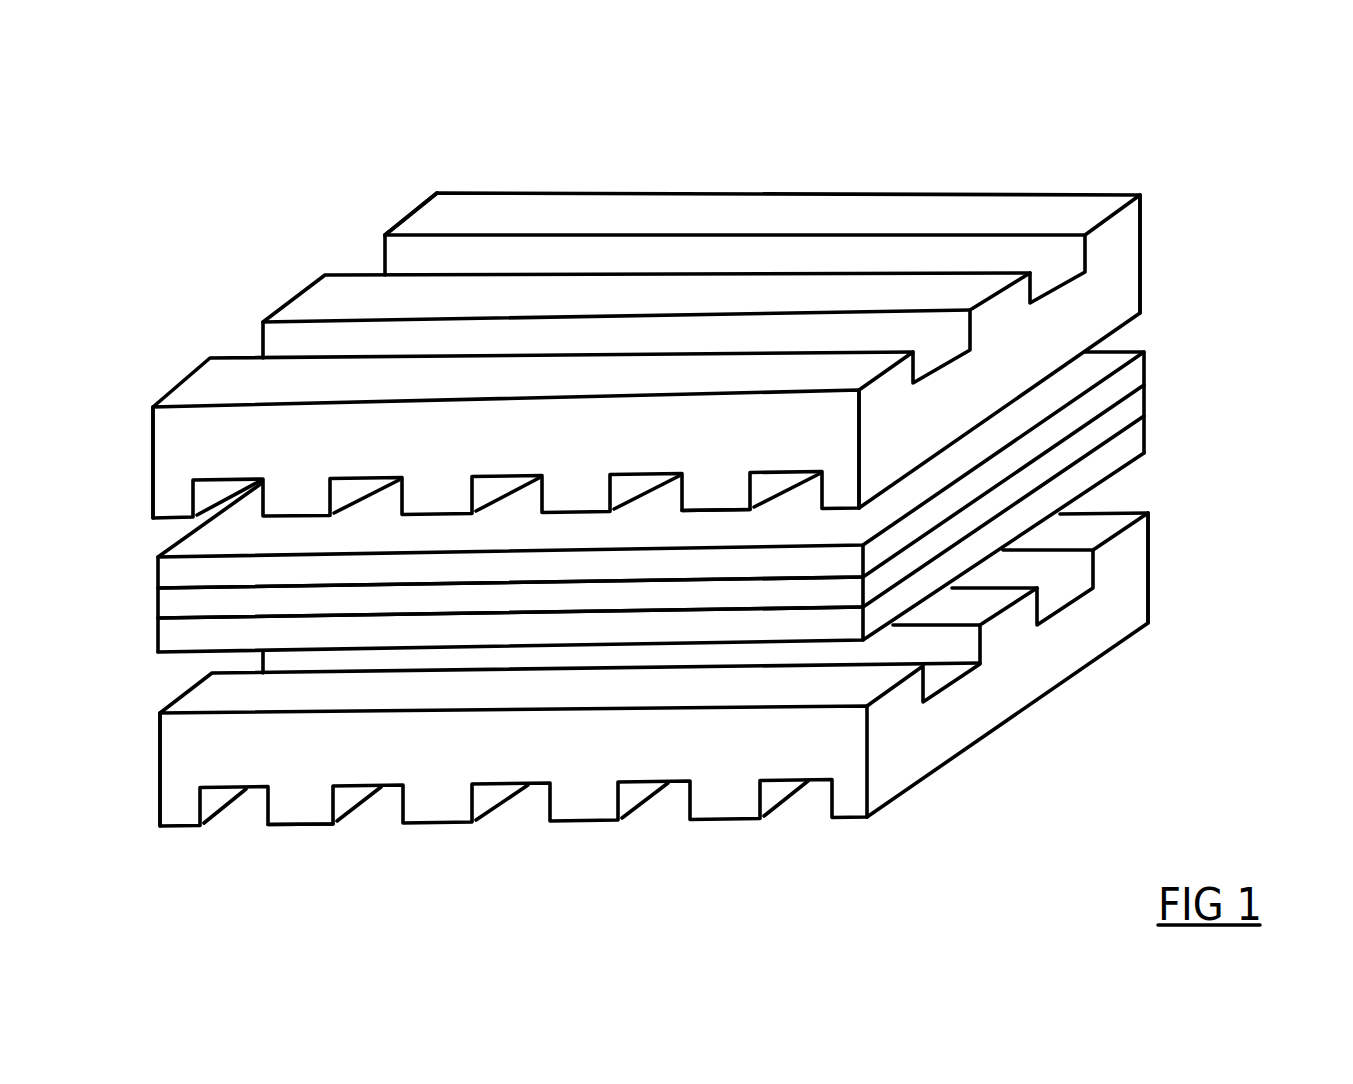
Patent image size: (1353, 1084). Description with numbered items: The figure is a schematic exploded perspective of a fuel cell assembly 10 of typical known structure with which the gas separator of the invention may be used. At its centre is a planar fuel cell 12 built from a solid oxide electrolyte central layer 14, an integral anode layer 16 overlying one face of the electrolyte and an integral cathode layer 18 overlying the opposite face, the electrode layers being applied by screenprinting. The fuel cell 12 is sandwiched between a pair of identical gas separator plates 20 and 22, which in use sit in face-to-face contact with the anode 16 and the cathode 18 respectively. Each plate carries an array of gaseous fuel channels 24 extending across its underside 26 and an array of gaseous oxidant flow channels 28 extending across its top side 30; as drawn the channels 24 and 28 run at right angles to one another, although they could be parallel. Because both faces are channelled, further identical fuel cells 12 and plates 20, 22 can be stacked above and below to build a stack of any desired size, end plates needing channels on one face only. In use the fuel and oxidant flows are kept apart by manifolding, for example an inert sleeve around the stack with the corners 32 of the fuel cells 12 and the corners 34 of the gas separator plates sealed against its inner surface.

The fuel cell assembly 10 is at (323, 118).
The fuel cell 12 is at (750, 471).
The solid oxide electrolyte central layer 14 is at (1132, 405).
The anode layer 16 is at (1132, 368).
The cathode layer 18 is at (1132, 447).
The gas separator plate 20 is at (1122, 231).
The gas separator plate 22 is at (1103, 633).
The gaseous fuel channels 24 is at (248, 497).
The underside 26 is at (718, 515).
The gaseous oxidant flow channels 28 is at (1088, 586).
The top side 30 is at (647, 208).
The corners of the fuel cells 32 is at (1144, 389).
The corners of the gas separator plates 34 is at (440, 195).